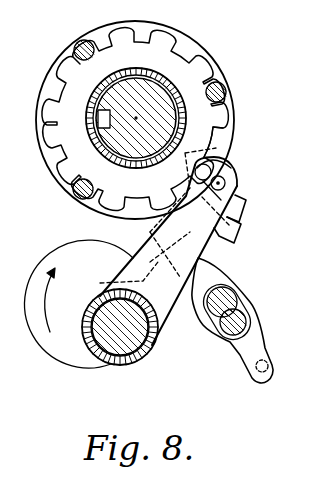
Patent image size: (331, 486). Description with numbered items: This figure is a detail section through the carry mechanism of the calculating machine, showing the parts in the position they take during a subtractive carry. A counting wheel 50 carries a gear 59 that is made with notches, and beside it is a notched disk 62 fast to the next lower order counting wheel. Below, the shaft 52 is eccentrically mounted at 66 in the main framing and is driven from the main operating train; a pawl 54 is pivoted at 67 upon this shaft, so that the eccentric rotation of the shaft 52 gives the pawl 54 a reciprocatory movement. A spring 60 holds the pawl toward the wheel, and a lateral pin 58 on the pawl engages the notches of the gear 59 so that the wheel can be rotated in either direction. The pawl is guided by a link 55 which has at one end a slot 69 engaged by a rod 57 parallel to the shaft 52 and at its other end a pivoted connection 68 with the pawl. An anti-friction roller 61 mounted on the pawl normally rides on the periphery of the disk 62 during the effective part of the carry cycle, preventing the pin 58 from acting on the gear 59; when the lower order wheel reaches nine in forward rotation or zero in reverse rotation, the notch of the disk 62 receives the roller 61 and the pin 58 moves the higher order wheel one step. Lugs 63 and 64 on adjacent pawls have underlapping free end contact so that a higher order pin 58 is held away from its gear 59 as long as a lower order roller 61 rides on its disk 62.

The counting wheel 50 is at (222, 165).
The shaft 52 is at (155, 347).
The pawl 54 is at (147, 275).
The link 55 is at (207, 266).
The rod 57 is at (222, 306).
The lateral pin 58 is at (230, 167).
The gear 59 is at (188, 53).
The spring 60 is at (248, 317).
The anti-friction roller 61 is at (235, 185).
The notched disk 62 is at (220, 118).
The lug 63 is at (226, 222).
The lug 64 is at (229, 235).
The eccentric mounting 66 is at (83, 360).
The pivot 67 is at (132, 360).
The pivoted connection 68 is at (190, 200).
The slot 69 is at (241, 303).